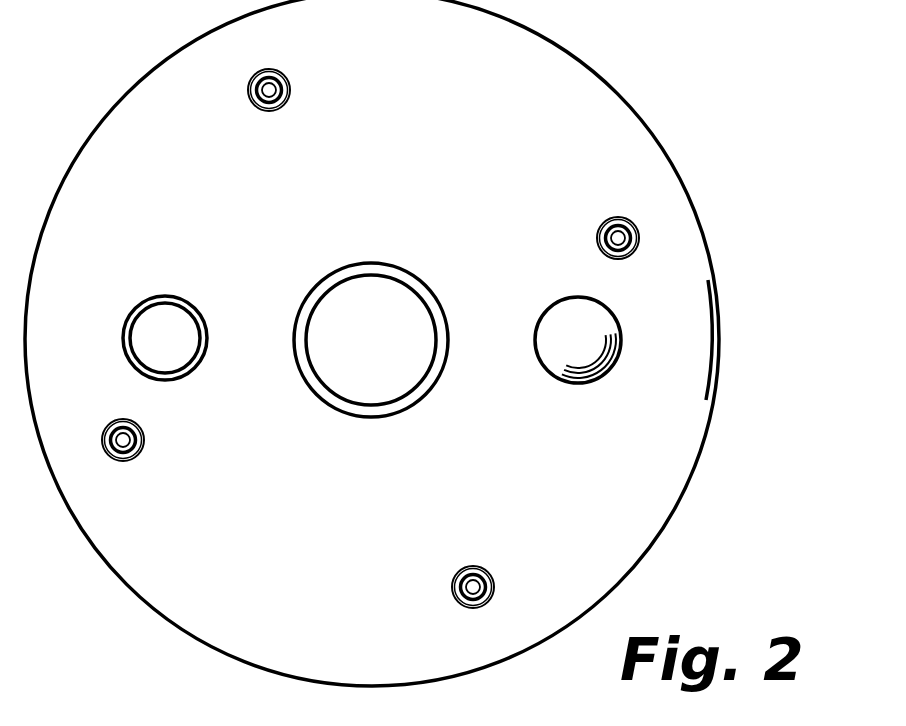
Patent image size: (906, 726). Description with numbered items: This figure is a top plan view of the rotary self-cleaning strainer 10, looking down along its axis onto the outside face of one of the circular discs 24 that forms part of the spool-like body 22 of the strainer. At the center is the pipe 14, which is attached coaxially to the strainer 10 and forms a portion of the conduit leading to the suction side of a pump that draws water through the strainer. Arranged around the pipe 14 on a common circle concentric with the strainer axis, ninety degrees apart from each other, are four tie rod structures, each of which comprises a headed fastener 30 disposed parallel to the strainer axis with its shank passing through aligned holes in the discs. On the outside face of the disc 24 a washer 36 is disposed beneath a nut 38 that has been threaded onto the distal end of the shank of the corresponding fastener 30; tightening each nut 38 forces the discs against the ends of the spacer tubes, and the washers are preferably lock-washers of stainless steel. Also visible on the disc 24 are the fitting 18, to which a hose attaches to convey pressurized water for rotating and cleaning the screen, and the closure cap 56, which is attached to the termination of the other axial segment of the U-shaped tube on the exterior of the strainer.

The rotary self-cleaning strainer 10 is at (414, 343).
The pipe 14 is at (415, 276).
The fitting 18 is at (197, 312).
The spool-like body 22 is at (647, 143).
The circular disc 24 is at (693, 328).
The headed fastener 30 is at (282, 76).
The washer 36 is at (283, 104).
The nut 38 is at (291, 90).
The closure cap 56 is at (614, 362).